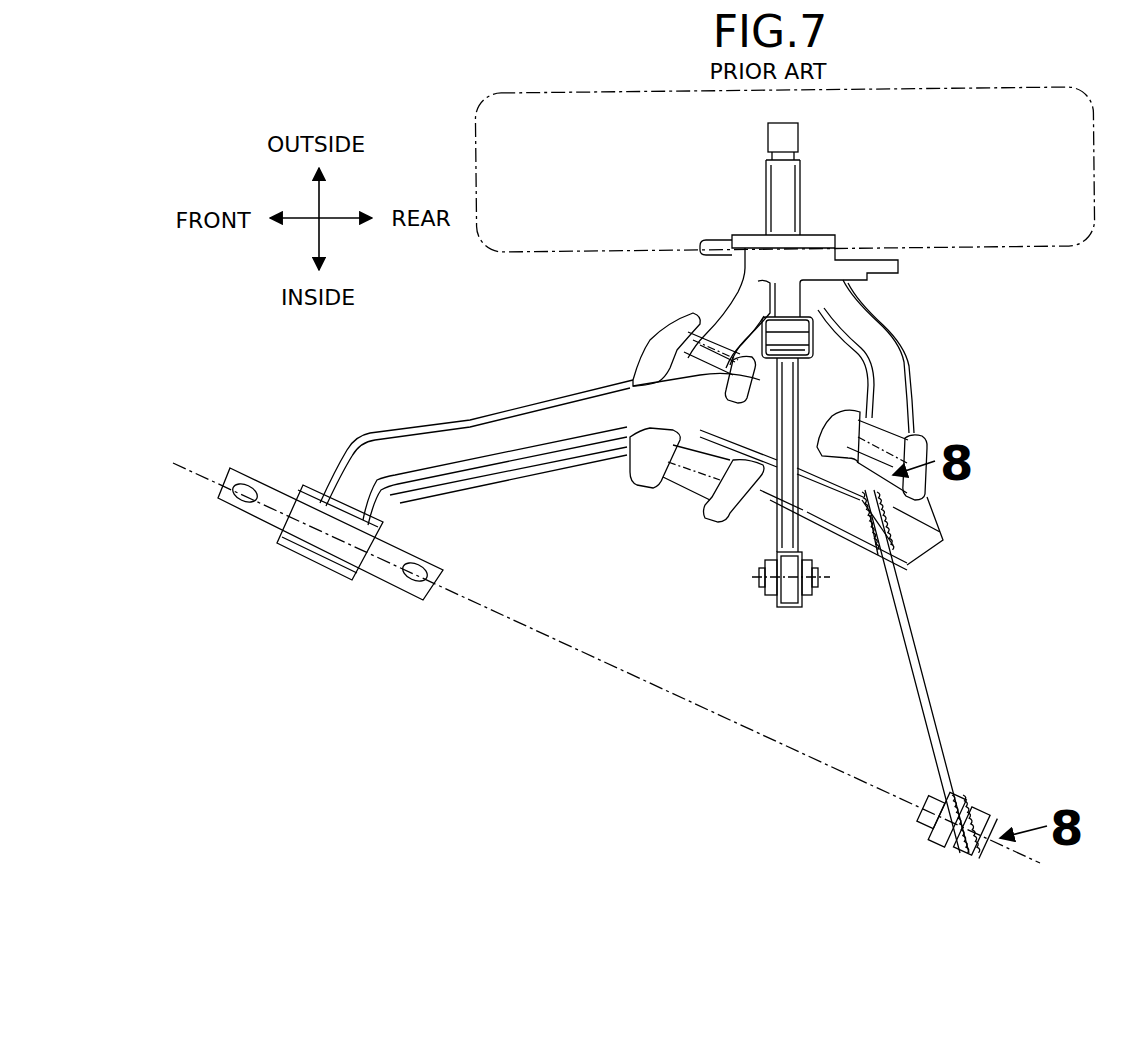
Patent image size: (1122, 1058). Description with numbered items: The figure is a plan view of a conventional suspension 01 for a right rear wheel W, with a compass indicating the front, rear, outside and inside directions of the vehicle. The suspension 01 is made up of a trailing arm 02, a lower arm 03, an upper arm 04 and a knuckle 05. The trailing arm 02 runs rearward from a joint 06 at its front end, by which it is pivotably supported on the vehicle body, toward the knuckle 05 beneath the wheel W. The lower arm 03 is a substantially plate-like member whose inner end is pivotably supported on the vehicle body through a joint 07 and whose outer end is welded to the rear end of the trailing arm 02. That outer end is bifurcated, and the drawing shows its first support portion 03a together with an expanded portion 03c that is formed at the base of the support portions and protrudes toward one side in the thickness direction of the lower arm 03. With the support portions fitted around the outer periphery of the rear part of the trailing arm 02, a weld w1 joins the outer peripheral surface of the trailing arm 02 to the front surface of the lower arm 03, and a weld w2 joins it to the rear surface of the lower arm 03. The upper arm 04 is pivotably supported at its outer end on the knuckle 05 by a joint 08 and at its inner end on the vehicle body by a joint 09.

The suspension 01 is at (606, 398).
The trailing arm 02 is at (485, 478).
The lower arm 03 is at (917, 663).
The first support portion 03a is at (866, 494).
The expanded portion 03c is at (897, 573).
The upper arm 04 is at (775, 525).
The knuckle 05 is at (903, 340).
The joint 06 is at (320, 570).
The joint 07 is at (972, 795).
The joint 08 is at (813, 352).
The joint 09 is at (801, 610).
The wheel W is at (1018, 246).
The weld w1 is at (872, 524).
The weld w2 is at (913, 527).